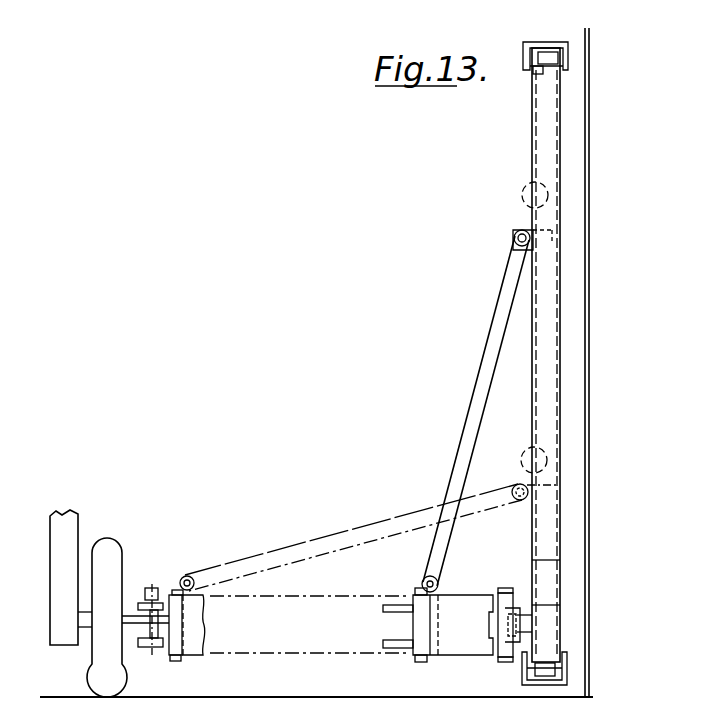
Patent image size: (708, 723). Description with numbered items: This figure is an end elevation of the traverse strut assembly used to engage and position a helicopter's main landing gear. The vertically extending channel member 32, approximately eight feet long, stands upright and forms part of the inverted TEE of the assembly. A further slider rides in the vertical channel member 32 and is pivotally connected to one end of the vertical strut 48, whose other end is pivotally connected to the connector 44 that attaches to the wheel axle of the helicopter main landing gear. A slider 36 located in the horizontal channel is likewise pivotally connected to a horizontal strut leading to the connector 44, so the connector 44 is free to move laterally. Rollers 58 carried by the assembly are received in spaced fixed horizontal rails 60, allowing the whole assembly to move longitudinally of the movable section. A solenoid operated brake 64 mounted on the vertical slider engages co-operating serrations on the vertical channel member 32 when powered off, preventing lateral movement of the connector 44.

The vertical channel member 32 is at (562, 160).
The slider 36 is at (545, 627).
The connector 44 is at (420, 646).
The vertical strut 48 is at (488, 338).
The rollers 58 is at (535, 68).
The fixed horizontal rails 60 is at (570, 48).
The solenoid operated brake 64 is at (522, 197).